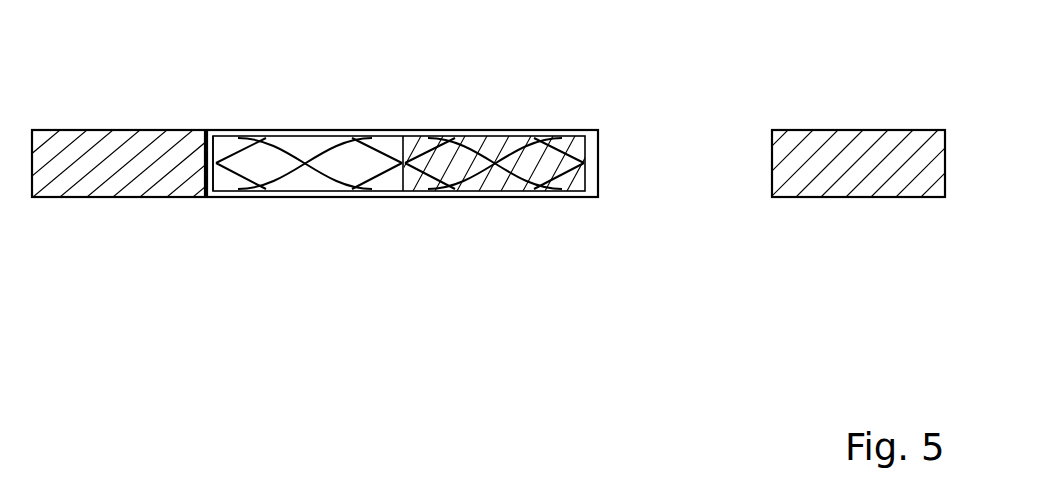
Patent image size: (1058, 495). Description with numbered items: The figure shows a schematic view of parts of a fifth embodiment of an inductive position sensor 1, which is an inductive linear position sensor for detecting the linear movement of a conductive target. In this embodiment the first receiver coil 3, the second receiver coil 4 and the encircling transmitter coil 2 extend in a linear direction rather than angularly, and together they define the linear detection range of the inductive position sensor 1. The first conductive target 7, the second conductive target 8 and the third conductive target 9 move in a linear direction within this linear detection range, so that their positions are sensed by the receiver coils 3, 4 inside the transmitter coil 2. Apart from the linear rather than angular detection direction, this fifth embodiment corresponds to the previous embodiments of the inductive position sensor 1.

The inductive position sensor 1 is at (771, 302).
The transmitter coil 2 is at (213, 130).
The first receiver coil 3 is at (349, 130).
The second receiver coil 4 is at (298, 172).
The first conductive target 7 is at (866, 165).
The second conductive target 8 is at (543, 165).
The third conductive target 9 is at (147, 165).